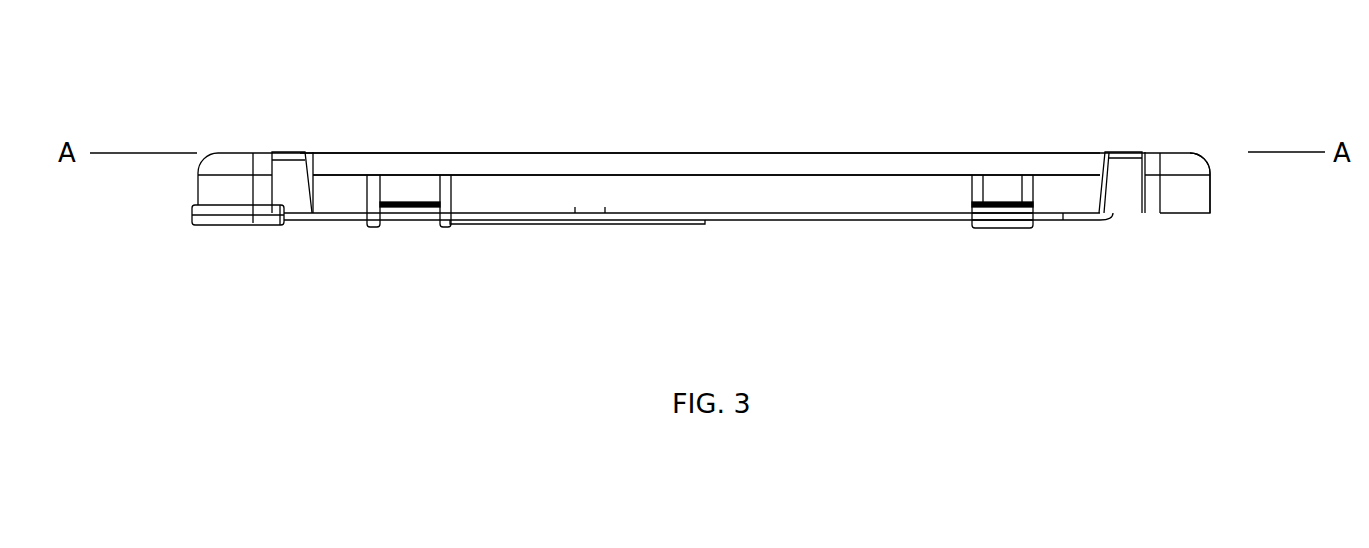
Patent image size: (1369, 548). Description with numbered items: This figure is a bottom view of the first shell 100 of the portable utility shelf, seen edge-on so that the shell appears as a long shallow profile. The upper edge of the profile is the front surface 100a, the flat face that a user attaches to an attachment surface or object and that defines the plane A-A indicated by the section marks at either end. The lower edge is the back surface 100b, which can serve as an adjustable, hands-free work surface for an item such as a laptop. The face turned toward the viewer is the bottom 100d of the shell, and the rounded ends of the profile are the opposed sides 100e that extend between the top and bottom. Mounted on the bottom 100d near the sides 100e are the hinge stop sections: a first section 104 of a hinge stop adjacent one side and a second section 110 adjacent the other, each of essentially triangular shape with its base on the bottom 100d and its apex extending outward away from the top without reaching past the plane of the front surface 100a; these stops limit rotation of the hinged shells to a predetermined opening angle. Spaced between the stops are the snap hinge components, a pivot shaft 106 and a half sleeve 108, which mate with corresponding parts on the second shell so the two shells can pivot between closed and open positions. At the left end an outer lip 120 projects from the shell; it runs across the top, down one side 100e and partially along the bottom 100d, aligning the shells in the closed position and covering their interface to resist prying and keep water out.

The first shell 100 is at (629, 188).
The front surface 100a is at (1015, 141).
The back surface 100b is at (760, 234).
The bottom 100d is at (792, 195).
The side 100e is at (1220, 207).
The first section of hinge stop 104 is at (283, 194).
The pivot shaft 106 is at (387, 216).
The half sleeve 108 is at (1020, 231).
The second section of hinge stop 110 is at (1138, 194).
The outer lip 120 is at (196, 218).